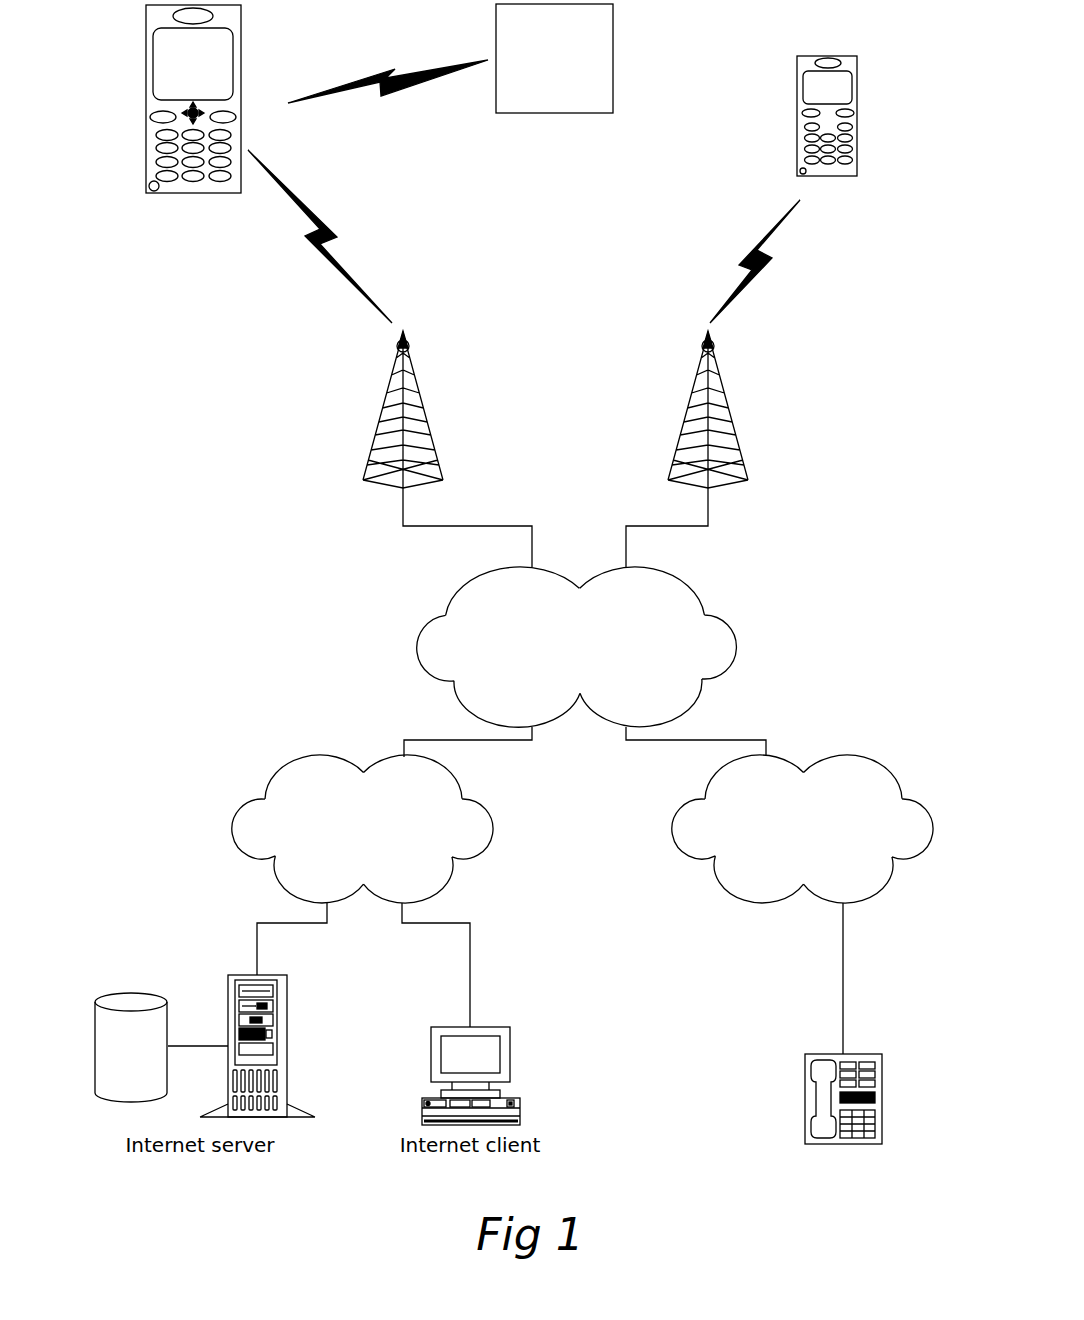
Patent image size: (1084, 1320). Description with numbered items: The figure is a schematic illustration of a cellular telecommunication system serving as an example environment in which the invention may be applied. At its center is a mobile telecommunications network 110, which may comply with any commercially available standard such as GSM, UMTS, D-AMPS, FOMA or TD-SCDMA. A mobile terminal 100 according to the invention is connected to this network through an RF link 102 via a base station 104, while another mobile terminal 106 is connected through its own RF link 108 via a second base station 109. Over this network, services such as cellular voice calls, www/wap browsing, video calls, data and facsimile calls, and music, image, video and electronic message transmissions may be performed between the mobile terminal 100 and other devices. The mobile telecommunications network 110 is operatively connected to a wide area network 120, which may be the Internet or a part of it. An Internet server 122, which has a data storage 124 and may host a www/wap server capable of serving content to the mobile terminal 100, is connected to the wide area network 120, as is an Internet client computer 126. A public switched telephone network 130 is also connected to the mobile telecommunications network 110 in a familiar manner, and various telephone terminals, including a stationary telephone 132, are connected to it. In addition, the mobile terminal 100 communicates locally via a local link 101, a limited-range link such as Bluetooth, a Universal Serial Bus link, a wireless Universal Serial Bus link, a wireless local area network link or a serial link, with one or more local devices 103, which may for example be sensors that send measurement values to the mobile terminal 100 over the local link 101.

The mobile terminal 100 is at (143, 115).
The local link 101 is at (355, 80).
The RF link 102 is at (330, 220).
The local devices 103 is at (536, 41).
The base station 104 is at (408, 412).
The mobile terminal 106 is at (814, 57).
The RF link 108 is at (740, 255).
The base station 109 is at (698, 387).
The mobile telecommunications network 110 is at (559, 611).
The wide area network 120 is at (344, 816).
The Internet server 122 is at (227, 1017).
The data storage 124 is at (123, 1000).
The Internet client computer 126 is at (493, 1025).
The public switched telephone network 130 is at (784, 820).
The stationary telephone 132 is at (807, 1078).